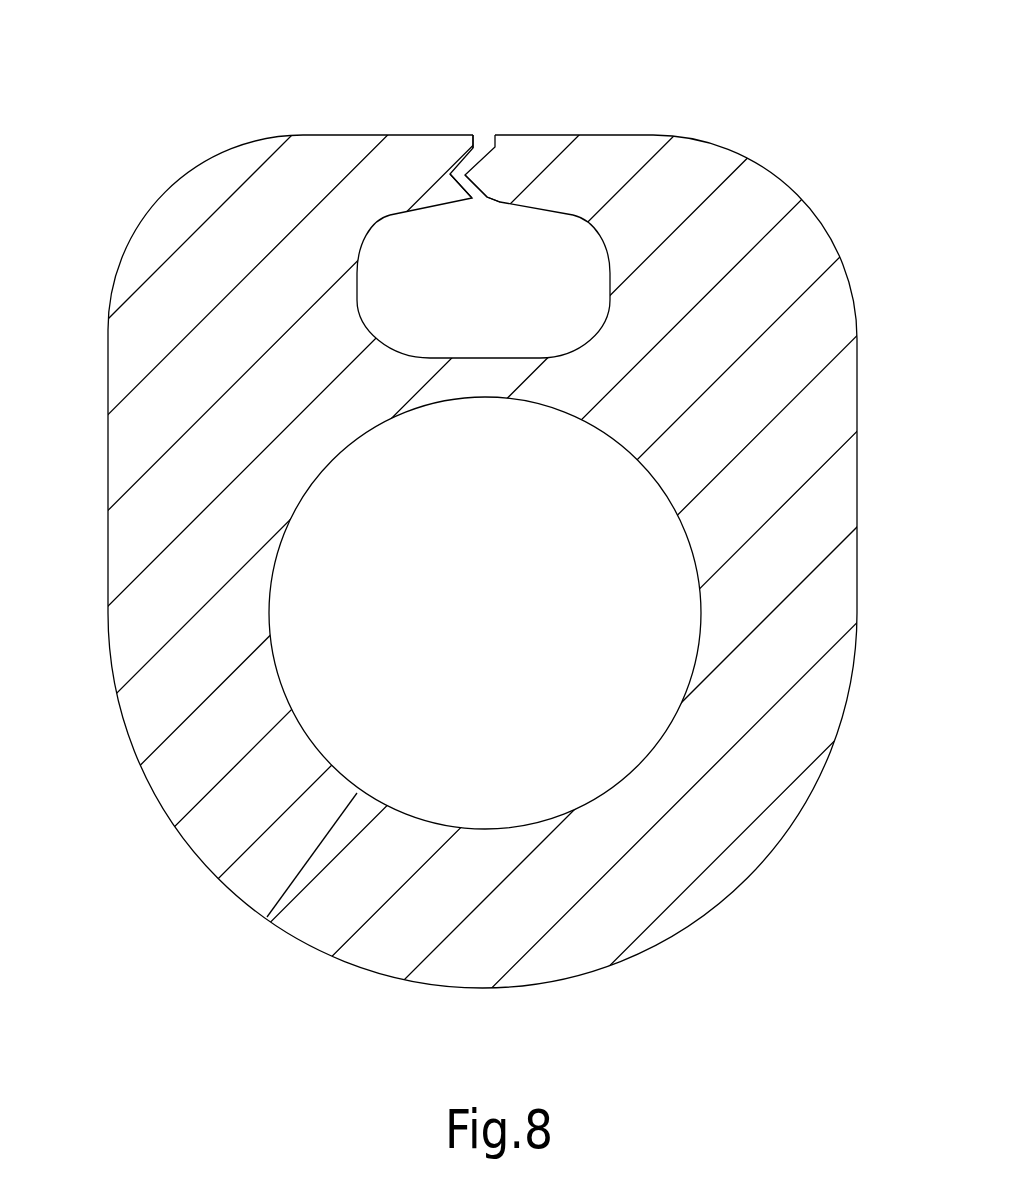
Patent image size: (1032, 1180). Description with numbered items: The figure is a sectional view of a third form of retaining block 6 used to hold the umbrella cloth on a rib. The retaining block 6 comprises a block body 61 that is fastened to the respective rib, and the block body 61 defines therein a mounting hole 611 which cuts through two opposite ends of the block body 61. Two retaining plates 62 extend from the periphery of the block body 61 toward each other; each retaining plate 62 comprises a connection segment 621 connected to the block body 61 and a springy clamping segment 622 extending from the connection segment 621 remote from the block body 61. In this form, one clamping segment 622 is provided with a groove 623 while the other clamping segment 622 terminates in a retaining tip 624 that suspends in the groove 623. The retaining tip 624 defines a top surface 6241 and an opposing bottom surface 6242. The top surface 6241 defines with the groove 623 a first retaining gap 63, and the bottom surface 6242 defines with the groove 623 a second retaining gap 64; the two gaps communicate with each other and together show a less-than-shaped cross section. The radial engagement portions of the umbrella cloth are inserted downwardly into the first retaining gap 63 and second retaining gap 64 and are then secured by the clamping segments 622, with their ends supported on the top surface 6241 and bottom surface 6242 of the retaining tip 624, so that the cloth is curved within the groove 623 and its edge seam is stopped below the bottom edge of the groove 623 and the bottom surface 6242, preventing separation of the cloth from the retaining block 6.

The retaining block 6 is at (745, 882).
The block body 61 is at (213, 823).
The mounting hole 611 is at (267, 917).
The retaining plate 62 is at (180, 186).
The connection segment 621 is at (150, 403).
The clamping segment 622 is at (300, 155).
The first retaining gap 63 is at (489, 143).
The groove 623 is at (443, 143).
The retaining tip 624 is at (520, 143).
The top surface 6241 is at (471, 137).
The bottom surface 6242 is at (488, 195).
The second retaining gap 64 is at (466, 197).